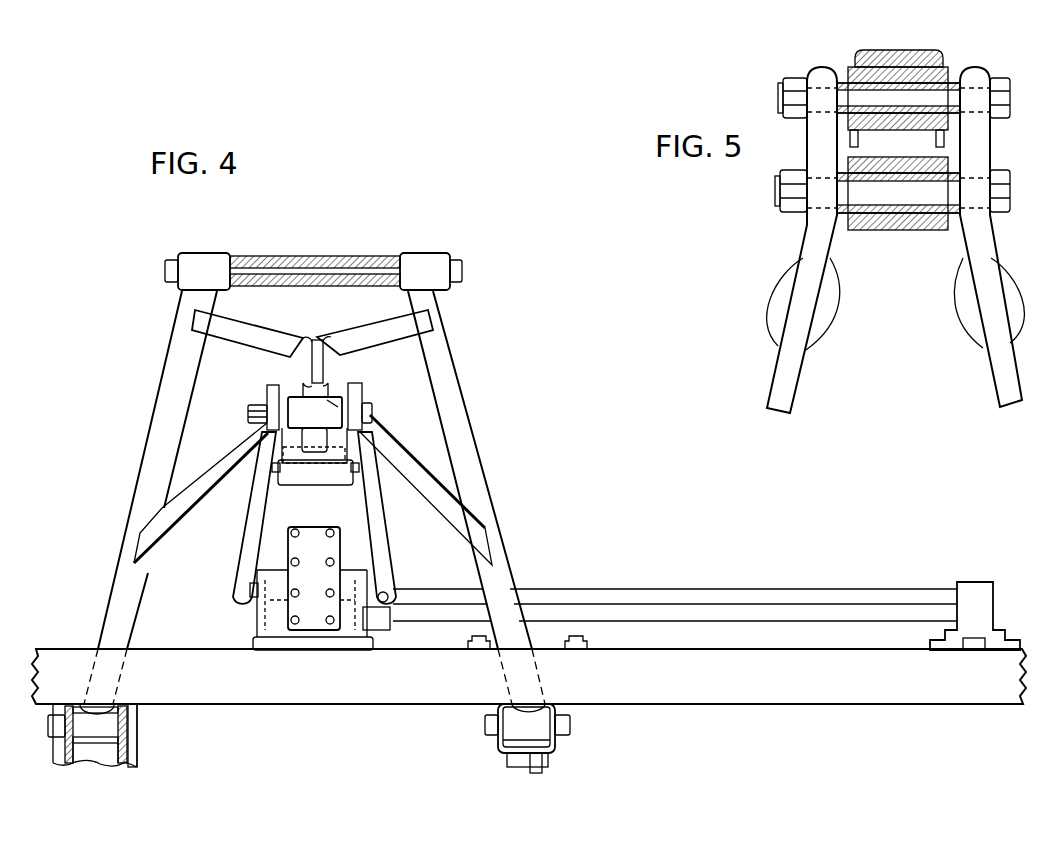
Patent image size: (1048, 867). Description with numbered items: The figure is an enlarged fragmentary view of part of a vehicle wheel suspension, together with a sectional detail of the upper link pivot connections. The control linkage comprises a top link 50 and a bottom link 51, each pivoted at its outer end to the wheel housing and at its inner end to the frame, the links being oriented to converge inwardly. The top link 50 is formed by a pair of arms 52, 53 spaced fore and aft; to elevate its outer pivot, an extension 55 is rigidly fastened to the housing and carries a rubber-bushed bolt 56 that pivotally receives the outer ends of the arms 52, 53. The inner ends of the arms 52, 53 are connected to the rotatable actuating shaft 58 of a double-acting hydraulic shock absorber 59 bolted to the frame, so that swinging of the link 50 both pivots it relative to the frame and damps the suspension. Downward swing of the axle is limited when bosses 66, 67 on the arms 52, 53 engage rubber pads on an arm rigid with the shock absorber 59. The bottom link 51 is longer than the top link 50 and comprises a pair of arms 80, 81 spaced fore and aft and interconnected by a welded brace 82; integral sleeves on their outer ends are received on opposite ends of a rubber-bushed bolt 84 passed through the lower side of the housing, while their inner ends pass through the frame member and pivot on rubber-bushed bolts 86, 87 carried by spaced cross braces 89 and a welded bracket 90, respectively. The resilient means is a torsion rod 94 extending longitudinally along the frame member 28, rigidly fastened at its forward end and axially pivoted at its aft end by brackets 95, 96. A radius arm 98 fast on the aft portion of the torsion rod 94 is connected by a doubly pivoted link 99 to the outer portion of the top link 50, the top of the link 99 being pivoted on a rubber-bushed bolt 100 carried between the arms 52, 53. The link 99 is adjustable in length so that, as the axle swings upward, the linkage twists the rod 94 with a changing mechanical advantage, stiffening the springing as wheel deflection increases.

In FIG. 4, the frame member 28 is at (399, 698).
In FIG. 4, the top link 50 is at (365, 397).
In FIG. 5, the top link 50 is at (806, 250).
In FIG. 4, the bottom link 51 is at (465, 392).
In FIG. 4, the arm 52 is at (253, 509).
In FIG. 5, the arm 52 is at (778, 380).
In FIG. 4, the arm 53 is at (377, 515).
In FIG. 5, the arm 53 is at (1007, 367).
In FIG. 5, the extension 55 is at (935, 54).
In FIG. 5, the rubber-bushed bolt 56 is at (782, 102).
In FIG. 4, the actuating shaft 58 is at (250, 590).
In FIG. 4, the hydraulic shock absorber 59 is at (267, 622).
In FIG. 5, the boss 66 is at (775, 293).
In FIG. 5, the boss 67 is at (1012, 287).
In FIG. 4, the arm 80 is at (158, 409).
In FIG. 4, the arm 81 is at (473, 450).
In FIG. 4, the welded brace 82 is at (348, 334).
In FIG. 4, the rubber-bushed bolt 84 is at (368, 270).
In FIG. 4, the rubber-bushed bolt 86 is at (130, 728).
In FIG. 4, the rubber-bushed bolt 87 is at (570, 727).
In FIG. 4, the cross braces 89 is at (125, 753).
In FIG. 4, the welded bracket 90 is at (555, 753).
In FIG. 4, the torsion rod 94 is at (620, 594).
In FIG. 4, the bracket 95 is at (978, 588).
In FIG. 4, the bracket 96 is at (285, 570).
In FIG. 4, the radius arm 98 is at (327, 510).
In FIG. 5, the doubly pivoted link 99 is at (897, 230).
In FIG. 5, the rubber-bushed bolt 100 is at (780, 193).